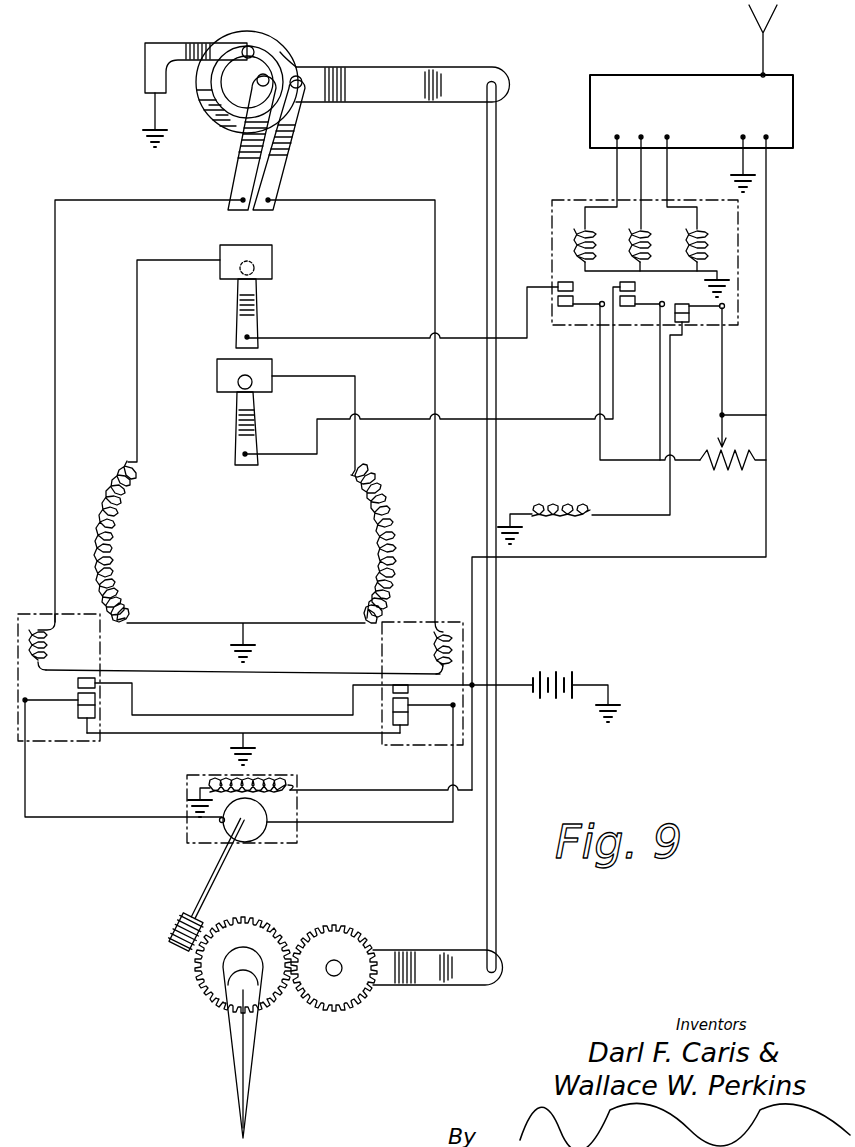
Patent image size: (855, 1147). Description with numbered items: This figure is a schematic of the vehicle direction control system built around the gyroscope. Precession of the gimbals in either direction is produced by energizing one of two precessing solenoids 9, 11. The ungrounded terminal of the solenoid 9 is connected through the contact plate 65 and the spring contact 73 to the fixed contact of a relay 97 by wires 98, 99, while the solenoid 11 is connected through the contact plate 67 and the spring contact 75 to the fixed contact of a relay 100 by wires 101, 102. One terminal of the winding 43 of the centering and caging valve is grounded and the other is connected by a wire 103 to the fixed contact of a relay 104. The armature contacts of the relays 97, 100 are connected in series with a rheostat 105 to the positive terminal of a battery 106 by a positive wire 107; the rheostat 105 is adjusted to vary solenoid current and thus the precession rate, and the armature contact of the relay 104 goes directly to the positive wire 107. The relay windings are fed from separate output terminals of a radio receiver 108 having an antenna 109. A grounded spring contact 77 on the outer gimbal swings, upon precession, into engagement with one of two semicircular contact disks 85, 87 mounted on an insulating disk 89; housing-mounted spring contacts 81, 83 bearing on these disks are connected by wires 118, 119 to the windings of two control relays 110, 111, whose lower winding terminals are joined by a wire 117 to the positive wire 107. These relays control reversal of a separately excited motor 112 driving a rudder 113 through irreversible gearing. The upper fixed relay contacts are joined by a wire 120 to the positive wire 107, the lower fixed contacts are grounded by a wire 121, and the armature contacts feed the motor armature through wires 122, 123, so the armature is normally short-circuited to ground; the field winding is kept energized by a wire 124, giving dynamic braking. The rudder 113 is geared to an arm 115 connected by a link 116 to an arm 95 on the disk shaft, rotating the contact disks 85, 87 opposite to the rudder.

The precessing solenoid 9 is at (106, 506).
The precessing solenoid 11 is at (389, 510).
The winding of the electromagnetic centering and caging valve 43 is at (544, 506).
The electrical contact plate 65 is at (276, 264).
The electrical contact plate 67 is at (220, 376).
The spring contact 73 is at (256, 328).
The spring contact 75 is at (240, 421).
The grounded spring contact 77 is at (172, 62).
The spring contact 81 is at (244, 172).
The spring contact 83 is at (284, 148).
The contact disk 85 is at (286, 63).
The contact disk 87 is at (265, 64).
The insulating disk 89 is at (243, 50).
The arm 95 is at (384, 76).
The relay 97 is at (576, 251).
The wire 98 is at (137, 386).
The wire 99 is at (366, 337).
The relay 100 is at (632, 263).
The wire 101 is at (302, 377).
The wire 102 is at (396, 418).
The wire 103 is at (672, 513).
The relay 104 is at (690, 263).
The rheostat 105 is at (745, 467).
The battery 106 is at (560, 679).
The positive wire 107 is at (696, 559).
The radio receiver 108 is at (628, 82).
The antenna 109 is at (762, 53).
The control relay 110 is at (20, 613).
The control relay 111 is at (456, 621).
The separately excited motor 112 is at (266, 832).
The rudder 113 is at (232, 1040).
The arm 115 is at (448, 988).
The link 116 is at (497, 832).
The wire 117 is at (286, 670).
The wire 118 is at (55, 396).
The wire 119 is at (436, 548).
The wire 120 is at (270, 715).
The wire 121 is at (192, 735).
The wire 122 is at (150, 818).
The wire 123 is at (366, 823).
The wire 124 is at (345, 790).